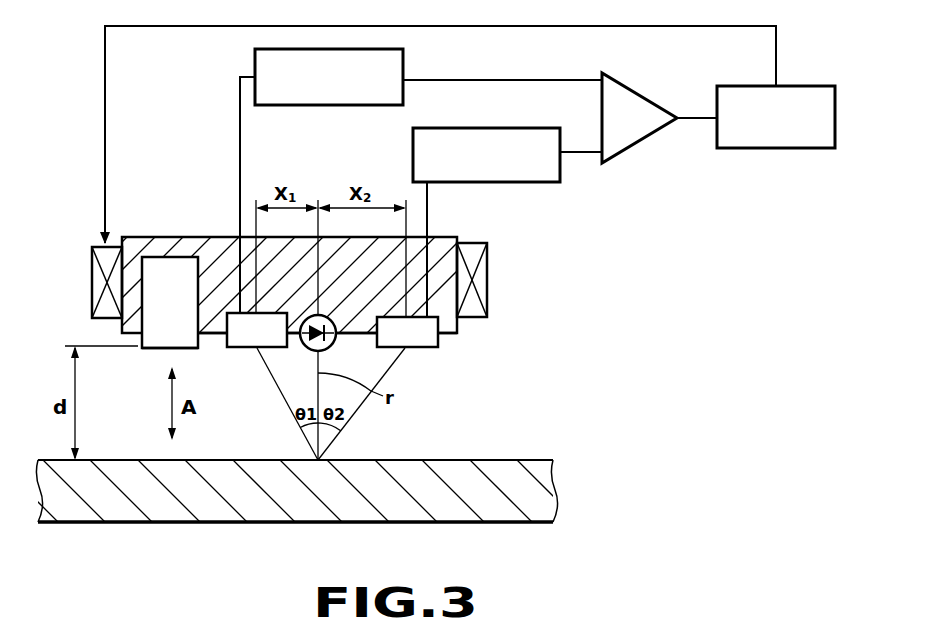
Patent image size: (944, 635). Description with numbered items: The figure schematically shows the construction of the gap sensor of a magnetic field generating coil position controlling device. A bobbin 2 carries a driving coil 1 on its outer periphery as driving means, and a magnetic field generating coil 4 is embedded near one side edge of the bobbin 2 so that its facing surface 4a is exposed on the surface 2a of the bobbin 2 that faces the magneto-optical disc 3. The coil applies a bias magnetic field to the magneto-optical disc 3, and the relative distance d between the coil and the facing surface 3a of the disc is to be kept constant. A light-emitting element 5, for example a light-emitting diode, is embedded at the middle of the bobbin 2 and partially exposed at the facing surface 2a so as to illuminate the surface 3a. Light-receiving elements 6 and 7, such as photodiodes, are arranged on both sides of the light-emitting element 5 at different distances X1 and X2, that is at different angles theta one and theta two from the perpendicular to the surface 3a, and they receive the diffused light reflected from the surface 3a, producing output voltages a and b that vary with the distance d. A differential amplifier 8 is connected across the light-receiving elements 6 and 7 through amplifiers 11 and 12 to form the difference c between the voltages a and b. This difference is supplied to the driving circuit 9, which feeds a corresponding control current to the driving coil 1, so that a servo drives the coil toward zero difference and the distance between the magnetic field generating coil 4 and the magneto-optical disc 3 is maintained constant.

The driving coil 1 is at (92, 268).
The bobbin 2 is at (215, 245).
The facing surface of the bobbin 2a is at (207, 335).
The magneto-optical disc 3 is at (540, 492).
The facing surface of the magneto-optical disc 3a is at (447, 460).
The magnetic field generating coil 4 is at (157, 347).
The facing surface of the magnetic field generating coil 4a is at (157, 349).
The light-emitting element 5 is at (330, 346).
The light-receiving element 6 is at (245, 347).
The light-receiving element 7 is at (438, 347).
The differential amplifier 8 is at (656, 104).
The driving circuit 9 is at (797, 86).
The amplifier 11 is at (257, 60).
The amplifier 12 is at (508, 182).